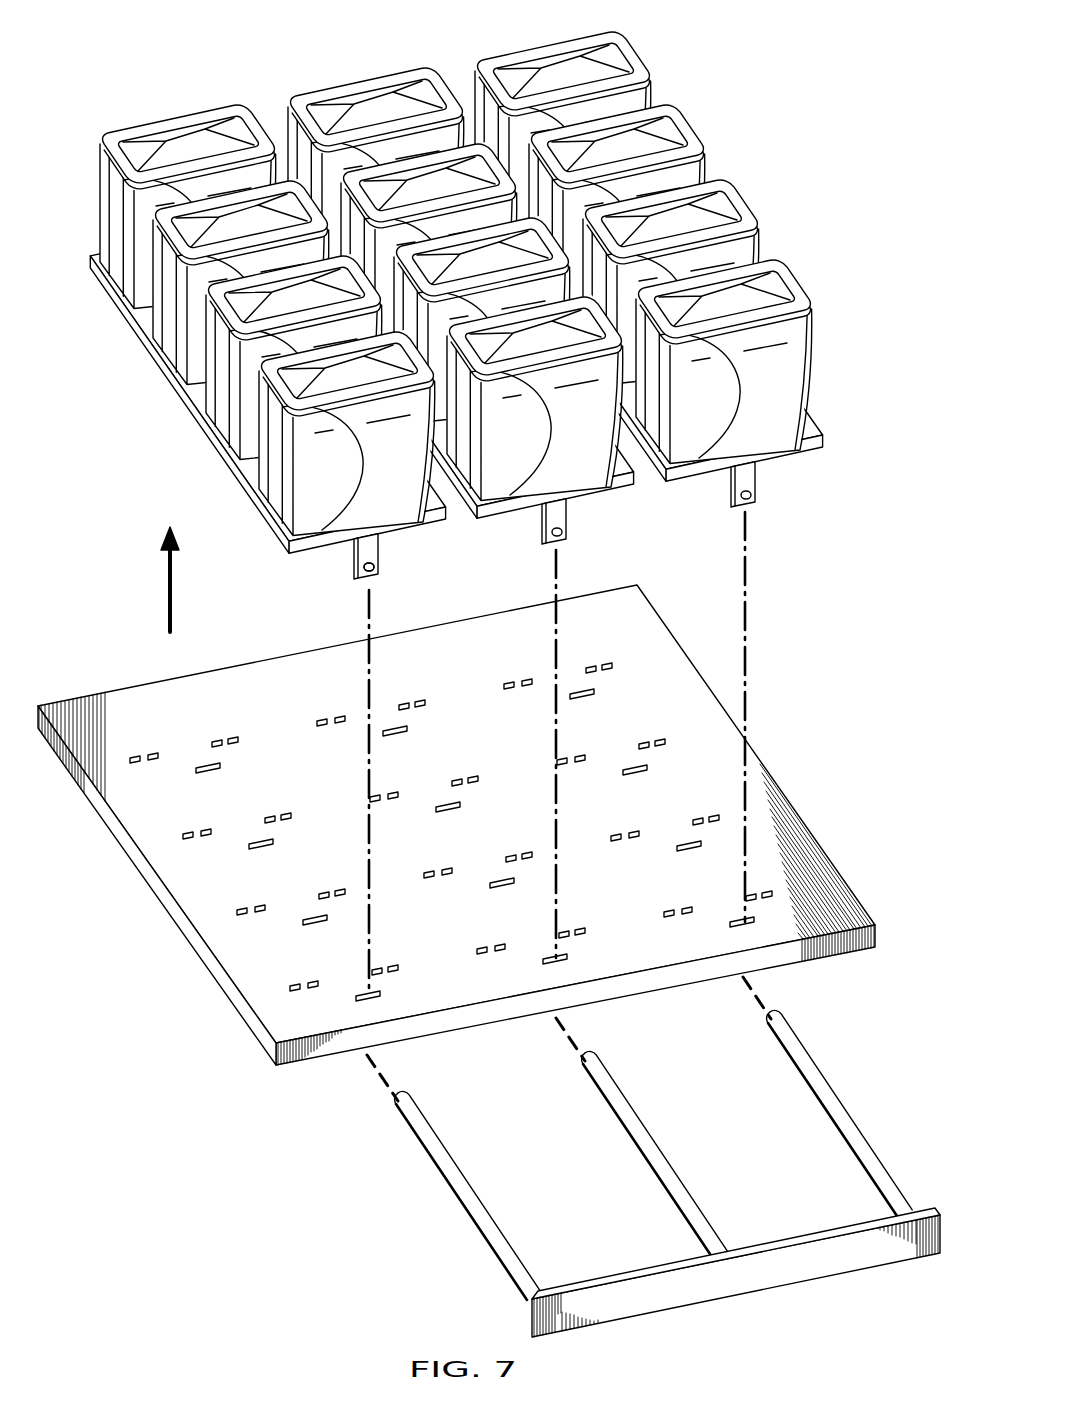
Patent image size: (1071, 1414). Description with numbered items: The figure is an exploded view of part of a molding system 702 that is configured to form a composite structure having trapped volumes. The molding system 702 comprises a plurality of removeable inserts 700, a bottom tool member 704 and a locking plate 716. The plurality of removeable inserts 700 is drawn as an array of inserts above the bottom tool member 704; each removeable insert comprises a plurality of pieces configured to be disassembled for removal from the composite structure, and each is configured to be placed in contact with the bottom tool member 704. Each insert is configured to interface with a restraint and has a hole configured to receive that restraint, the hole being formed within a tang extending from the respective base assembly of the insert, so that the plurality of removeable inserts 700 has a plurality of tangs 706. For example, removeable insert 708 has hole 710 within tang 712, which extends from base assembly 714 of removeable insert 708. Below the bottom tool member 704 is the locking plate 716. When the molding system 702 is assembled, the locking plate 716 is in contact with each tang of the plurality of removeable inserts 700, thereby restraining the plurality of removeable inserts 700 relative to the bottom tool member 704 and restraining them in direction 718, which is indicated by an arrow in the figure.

The plurality of removeable inserts 700 is at (212, 83).
The molding system 702 is at (113, 61).
The bottom tool member 704 is at (148, 878).
The plurality of tangs 706 is at (347, 571).
The removeable insert 708 is at (251, 420).
The hole 710 is at (383, 573).
The tang 712 is at (384, 548).
The base assembly 714 is at (266, 505).
The locking plate 716 is at (767, 1282).
The direction 718 is at (168, 578).